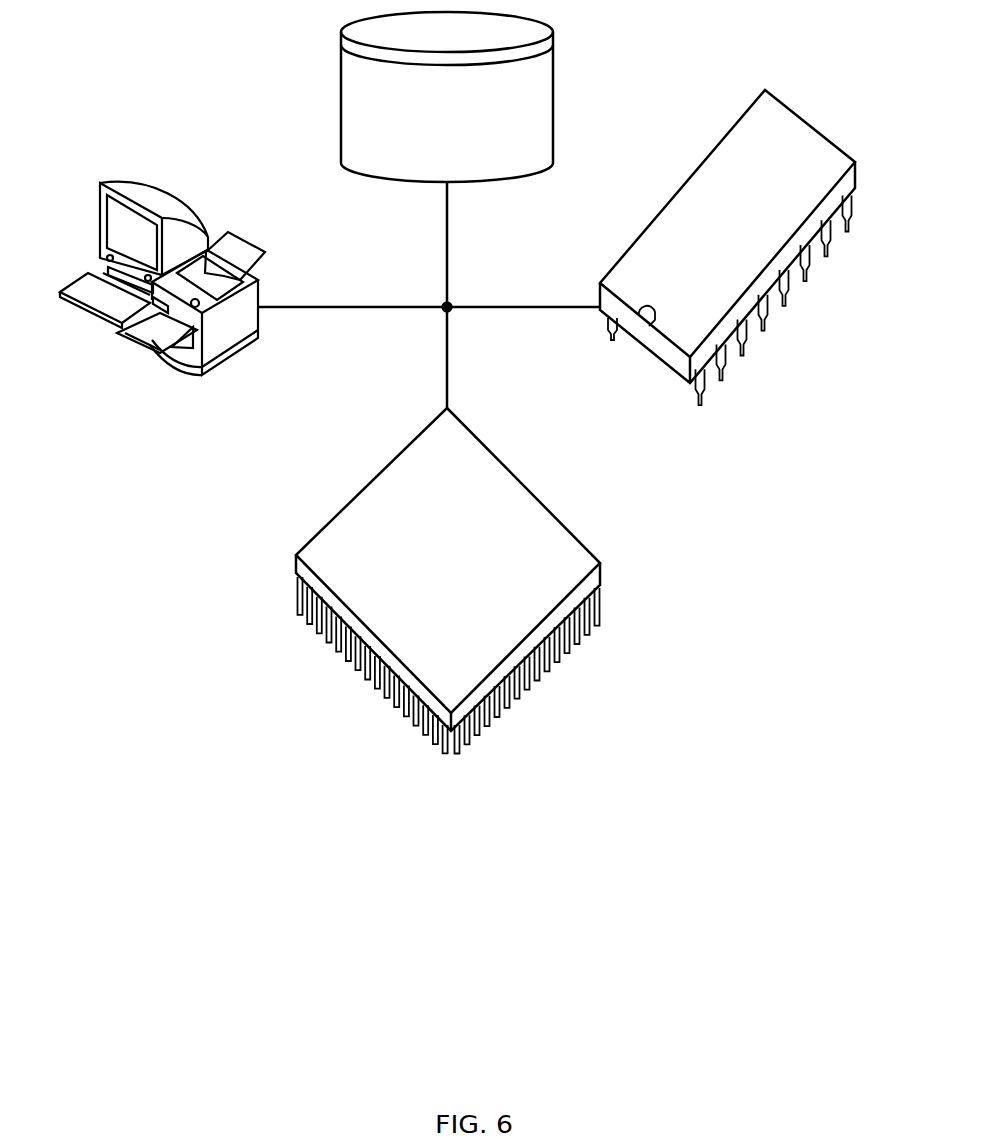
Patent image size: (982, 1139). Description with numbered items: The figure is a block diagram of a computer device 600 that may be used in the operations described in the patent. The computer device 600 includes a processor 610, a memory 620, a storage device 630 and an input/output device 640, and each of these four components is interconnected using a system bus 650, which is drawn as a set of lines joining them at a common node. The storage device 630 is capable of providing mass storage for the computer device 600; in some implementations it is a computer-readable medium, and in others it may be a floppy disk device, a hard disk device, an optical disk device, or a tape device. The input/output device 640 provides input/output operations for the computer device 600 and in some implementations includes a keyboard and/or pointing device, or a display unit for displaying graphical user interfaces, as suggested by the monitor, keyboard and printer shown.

The computer device 600 is at (142, 702).
The processor 610 is at (368, 485).
The memory 620 is at (680, 188).
The storage device 630 is at (340, 99).
The input/output device 640 is at (100, 183).
The system bus 650 is at (387, 307).